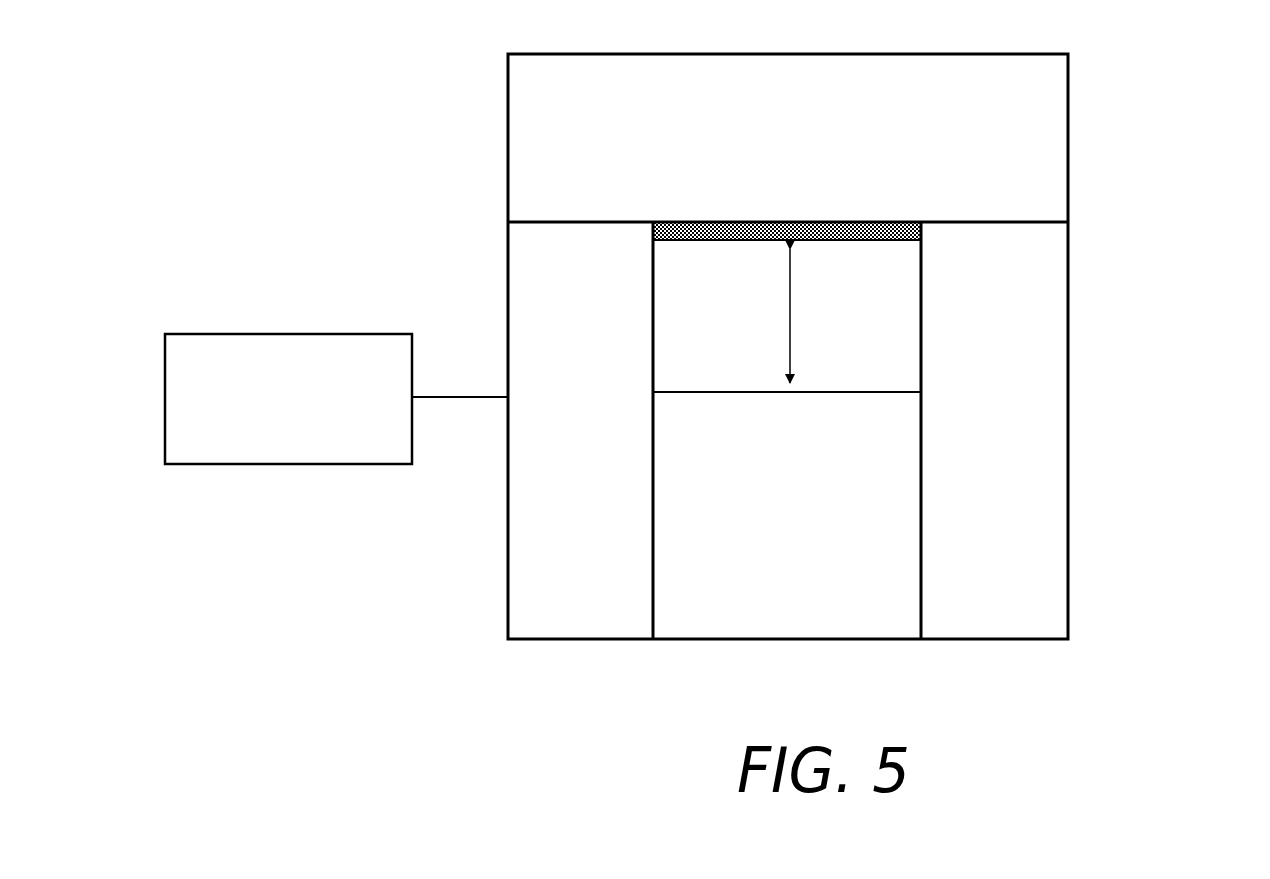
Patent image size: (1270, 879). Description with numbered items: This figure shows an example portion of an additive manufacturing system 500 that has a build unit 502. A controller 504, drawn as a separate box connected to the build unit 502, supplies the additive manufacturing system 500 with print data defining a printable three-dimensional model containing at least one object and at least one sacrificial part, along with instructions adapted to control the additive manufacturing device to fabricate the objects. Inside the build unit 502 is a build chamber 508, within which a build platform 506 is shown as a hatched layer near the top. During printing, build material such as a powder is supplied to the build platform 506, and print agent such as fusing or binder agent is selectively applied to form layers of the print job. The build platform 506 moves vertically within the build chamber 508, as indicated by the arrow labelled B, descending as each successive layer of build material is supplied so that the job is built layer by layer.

The additive manufacturing system 500 is at (1084, 140).
The build unit 502 is at (1068, 432).
The controller 504 is at (315, 416).
The build platform 506 is at (867, 237).
The build chamber 508 is at (865, 334).